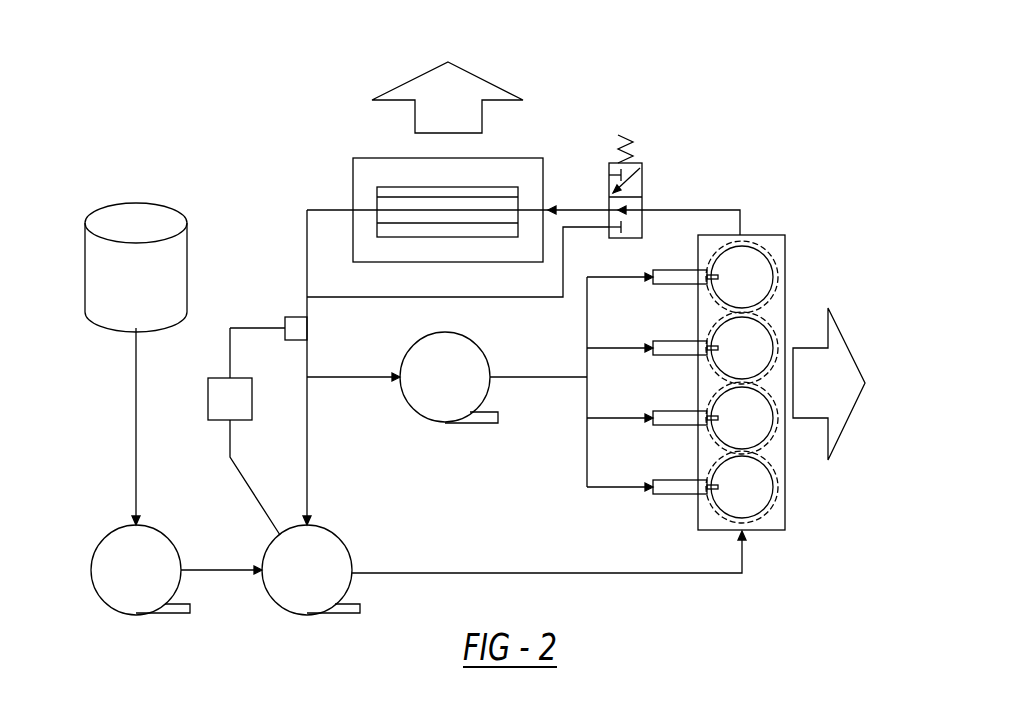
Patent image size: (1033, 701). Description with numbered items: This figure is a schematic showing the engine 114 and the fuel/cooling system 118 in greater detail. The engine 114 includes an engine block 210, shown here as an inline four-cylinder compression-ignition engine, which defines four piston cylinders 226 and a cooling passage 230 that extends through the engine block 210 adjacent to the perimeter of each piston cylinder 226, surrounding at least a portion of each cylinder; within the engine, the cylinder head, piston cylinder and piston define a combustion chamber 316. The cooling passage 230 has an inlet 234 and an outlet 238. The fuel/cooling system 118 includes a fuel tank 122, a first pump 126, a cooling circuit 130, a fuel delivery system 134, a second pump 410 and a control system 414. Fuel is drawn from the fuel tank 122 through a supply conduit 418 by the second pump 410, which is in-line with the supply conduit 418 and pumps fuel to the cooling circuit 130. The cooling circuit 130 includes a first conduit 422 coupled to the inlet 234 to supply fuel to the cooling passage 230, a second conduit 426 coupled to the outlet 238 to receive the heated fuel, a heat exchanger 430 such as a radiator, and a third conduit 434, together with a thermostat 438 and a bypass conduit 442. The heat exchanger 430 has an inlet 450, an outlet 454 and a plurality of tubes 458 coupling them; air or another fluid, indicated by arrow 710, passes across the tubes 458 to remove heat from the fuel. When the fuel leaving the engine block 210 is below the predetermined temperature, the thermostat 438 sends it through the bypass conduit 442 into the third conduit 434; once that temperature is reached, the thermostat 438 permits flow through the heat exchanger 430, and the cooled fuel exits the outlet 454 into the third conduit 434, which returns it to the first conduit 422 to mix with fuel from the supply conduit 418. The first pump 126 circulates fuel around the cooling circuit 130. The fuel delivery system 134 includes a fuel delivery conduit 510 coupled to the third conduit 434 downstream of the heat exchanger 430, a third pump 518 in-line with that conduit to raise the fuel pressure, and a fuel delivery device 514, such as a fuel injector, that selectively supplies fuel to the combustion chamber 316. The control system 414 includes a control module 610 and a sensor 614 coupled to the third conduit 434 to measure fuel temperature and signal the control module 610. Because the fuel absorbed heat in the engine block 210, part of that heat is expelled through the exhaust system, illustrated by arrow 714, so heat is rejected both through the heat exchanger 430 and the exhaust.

The engine 114 is at (792, 232).
The fuel/cooling system 118 is at (293, 146).
The fuel tank 122 is at (146, 203).
The first pump 126 is at (303, 615).
The cooling circuit 130 is at (585, 579).
The fuel delivery system 134 is at (538, 470).
The engine block 210 is at (785, 308).
The piston cylinder 226 is at (705, 510).
The cooling passage 230 is at (772, 520).
The inlet 234 is at (748, 540).
The outlet 238 is at (742, 235).
The combustion chamber 316 is at (765, 483).
The second pump 410 is at (123, 615).
The control system 414 is at (205, 445).
The supply conduit 418 is at (136, 390).
The first conduit 422 is at (700, 575).
The second conduit 426 is at (703, 210).
The heat exchanger 430 is at (370, 158).
The third conduit 434 is at (307, 362).
The thermostat 438 is at (645, 182).
The bypass conduit 442 is at (500, 297).
The inlet 450 is at (548, 210).
The outlet 454 is at (352, 210).
The tubes 458 is at (470, 187).
The fuel delivery conduit 510 is at (340, 378).
The fuel delivery device 514 is at (678, 478).
The third pump 518 is at (418, 414).
The control module 610 is at (208, 396).
The sensor 614 is at (297, 317).
The arrow 710 is at (496, 84).
The arrow 714 is at (847, 425).